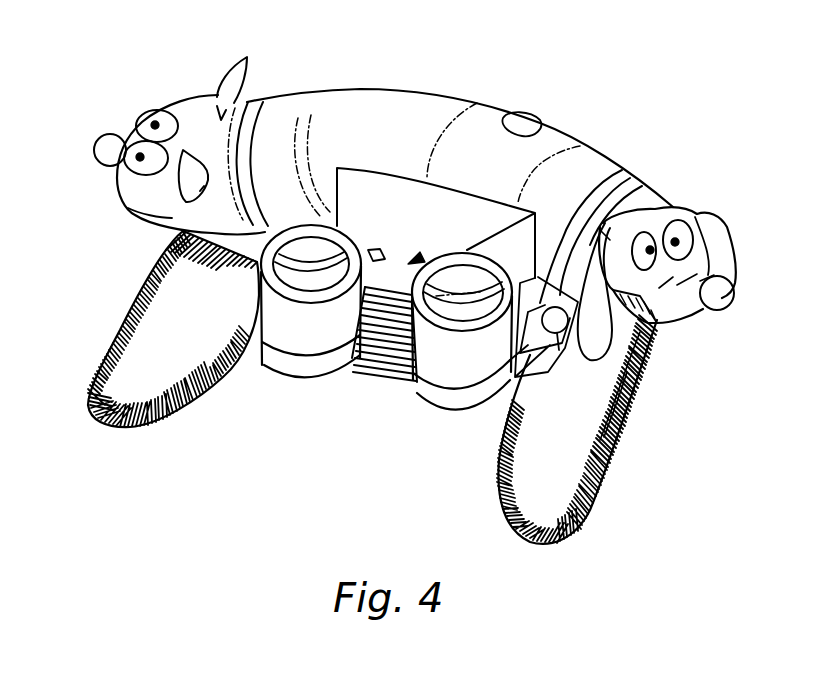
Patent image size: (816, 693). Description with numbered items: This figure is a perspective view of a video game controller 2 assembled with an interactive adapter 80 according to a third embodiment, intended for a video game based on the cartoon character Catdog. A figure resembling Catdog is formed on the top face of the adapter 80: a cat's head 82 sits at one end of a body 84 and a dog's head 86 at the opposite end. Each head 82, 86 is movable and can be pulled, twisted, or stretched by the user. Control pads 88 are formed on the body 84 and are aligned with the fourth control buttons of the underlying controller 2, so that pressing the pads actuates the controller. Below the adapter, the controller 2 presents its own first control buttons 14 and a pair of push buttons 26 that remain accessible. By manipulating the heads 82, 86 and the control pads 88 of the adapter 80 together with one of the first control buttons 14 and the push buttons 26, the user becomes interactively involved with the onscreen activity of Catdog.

The video game controller 2 is at (565, 542).
The first control buttons 14 is at (536, 358).
The push buttons 26 is at (468, 288).
The adapter 80 is at (622, 172).
The cat's head 82 is at (133, 212).
The body 84 is at (527, 140).
The dog's head 86 is at (692, 310).
The control pads 88 is at (414, 258).